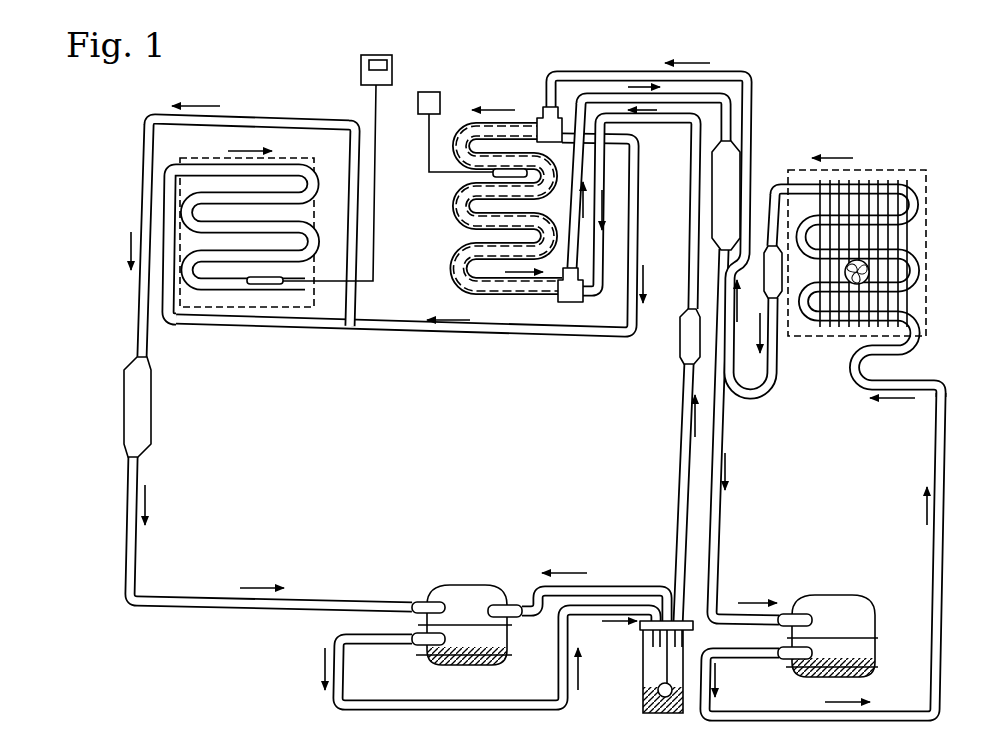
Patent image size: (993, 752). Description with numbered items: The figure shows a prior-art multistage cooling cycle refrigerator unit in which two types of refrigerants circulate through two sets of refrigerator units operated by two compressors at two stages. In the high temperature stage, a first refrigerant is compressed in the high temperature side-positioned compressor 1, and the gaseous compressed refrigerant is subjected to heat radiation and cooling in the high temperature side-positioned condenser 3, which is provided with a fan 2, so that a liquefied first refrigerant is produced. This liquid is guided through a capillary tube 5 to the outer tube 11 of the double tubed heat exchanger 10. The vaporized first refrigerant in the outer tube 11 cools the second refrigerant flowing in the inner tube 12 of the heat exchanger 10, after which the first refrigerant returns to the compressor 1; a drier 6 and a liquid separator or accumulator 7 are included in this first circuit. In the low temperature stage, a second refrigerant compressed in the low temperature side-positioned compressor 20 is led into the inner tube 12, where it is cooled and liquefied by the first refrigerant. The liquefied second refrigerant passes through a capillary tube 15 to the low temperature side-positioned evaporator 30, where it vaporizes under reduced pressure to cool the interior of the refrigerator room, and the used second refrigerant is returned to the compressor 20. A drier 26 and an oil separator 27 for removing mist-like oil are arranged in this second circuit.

The high temperature side-positioned compressor 1 is at (861, 595).
The fan 2 is at (870, 273).
The high temperature side-positioned condenser 3 is at (917, 236).
The capillary tube 5 is at (752, 107).
The drier 6 is at (767, 268).
The liquid separator (accumulator) 7 is at (740, 150).
The double tubed heat exchanger 10 is at (490, 96).
The outer tube 11 is at (518, 123).
The inner tube 12 is at (570, 295).
The capillary tube 15 is at (708, 94).
The low temperature side-positioned compressor 20 is at (444, 583).
The drier 26 is at (683, 363).
The oil separator 27 is at (150, 408).
The low temperature side-positioned evaporator 30 is at (212, 157).